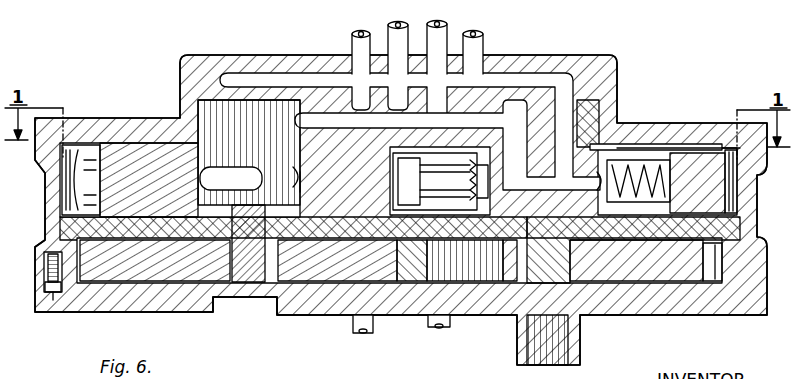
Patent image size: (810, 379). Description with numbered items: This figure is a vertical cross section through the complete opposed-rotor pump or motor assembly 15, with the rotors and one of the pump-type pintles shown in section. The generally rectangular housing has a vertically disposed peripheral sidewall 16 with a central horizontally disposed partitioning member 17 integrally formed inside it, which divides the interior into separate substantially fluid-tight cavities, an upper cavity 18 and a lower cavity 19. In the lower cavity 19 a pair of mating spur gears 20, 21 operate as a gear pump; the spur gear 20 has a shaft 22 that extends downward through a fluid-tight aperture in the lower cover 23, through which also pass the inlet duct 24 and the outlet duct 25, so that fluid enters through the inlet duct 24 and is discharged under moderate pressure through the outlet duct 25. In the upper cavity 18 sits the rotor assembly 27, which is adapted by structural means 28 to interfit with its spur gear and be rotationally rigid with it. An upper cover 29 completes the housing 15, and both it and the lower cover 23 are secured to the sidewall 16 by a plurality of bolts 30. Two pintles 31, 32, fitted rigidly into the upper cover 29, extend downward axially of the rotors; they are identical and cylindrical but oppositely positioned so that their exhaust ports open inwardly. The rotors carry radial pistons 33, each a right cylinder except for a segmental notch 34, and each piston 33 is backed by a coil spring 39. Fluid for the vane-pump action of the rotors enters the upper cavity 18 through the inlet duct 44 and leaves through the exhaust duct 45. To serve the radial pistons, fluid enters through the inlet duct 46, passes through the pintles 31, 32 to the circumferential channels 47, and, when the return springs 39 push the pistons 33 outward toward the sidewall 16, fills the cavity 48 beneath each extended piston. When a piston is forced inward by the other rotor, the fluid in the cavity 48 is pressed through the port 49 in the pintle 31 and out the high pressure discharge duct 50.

The assembly 15 is at (116, 60).
The peripheral sidewall 16 is at (52, 204).
The partitioning member 17 is at (327, 216).
The upper cavity 18 is at (758, 170).
The lower cavity 19 is at (720, 258).
The spur gear 20 is at (636, 260).
The spur gear 21 is at (298, 260).
The shaft 22 is at (518, 343).
The lower cover 23 is at (323, 314).
The inlet duct 24 is at (365, 333).
The outlet duct 25 is at (437, 328).
The rotor assembly 27 is at (149, 180).
The structural means 28 is at (231, 255).
The upper cover 29 is at (100, 118).
The bolts 30 is at (53, 313).
The pintle 31 is at (598, 110).
The pintle 32 is at (276, 133).
The piston 33 is at (692, 166).
The segmental notch 34 is at (412, 166).
The coil spring 39 is at (656, 137).
The inlet duct 44 is at (394, 33).
The exhaust duct 45 is at (355, 40).
The inlet duct 46 is at (480, 43).
The circumferential channels 47 is at (246, 168).
The cavity 48 is at (633, 218).
The port 49 is at (302, 179).
The high pressure discharge duct 50 is at (442, 33).